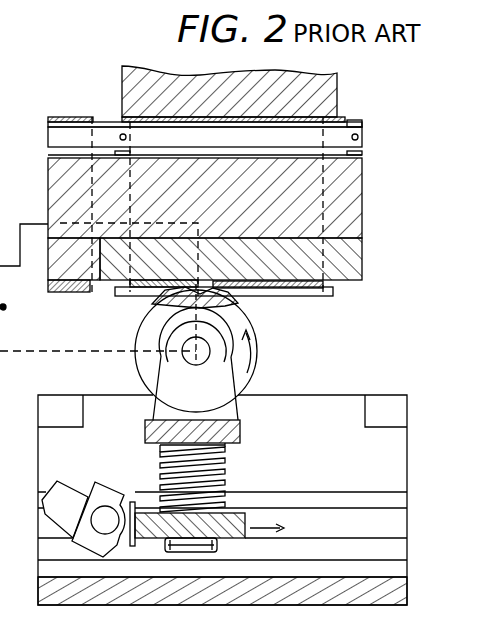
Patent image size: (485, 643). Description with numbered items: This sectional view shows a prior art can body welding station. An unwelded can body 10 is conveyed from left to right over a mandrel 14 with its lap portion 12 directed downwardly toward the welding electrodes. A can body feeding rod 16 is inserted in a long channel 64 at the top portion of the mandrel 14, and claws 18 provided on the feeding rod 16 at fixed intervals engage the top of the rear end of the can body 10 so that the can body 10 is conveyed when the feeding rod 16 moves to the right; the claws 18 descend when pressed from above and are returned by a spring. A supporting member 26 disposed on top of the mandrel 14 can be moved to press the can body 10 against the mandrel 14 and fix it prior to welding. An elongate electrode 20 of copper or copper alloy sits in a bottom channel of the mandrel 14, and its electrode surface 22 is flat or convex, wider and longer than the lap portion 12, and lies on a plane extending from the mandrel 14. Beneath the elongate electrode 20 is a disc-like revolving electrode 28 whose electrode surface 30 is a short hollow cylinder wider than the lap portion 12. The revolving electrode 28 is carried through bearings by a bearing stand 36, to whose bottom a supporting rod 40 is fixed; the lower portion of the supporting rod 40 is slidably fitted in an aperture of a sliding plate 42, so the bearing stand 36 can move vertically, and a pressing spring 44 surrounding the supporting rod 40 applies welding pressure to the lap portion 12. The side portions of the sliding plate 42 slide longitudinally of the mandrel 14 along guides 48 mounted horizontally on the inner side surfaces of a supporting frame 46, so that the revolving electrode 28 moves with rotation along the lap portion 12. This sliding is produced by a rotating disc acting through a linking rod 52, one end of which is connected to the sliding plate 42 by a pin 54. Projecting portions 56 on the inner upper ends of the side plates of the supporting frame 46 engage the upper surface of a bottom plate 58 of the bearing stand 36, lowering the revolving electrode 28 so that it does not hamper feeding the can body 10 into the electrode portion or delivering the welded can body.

The can body 10 is at (315, 112).
The lap portion 12 is at (263, 293).
The mandrel 14 is at (357, 197).
The can body feeding rod 16 is at (360, 145).
The claws 18 is at (360, 123).
The elongate electrode 20 is at (357, 256).
The electrode surface 22 is at (347, 288).
The supporting member 26 is at (328, 82).
The revolving electrode 28 is at (248, 390).
The electrode surface 30 is at (263, 326).
The bearing stand 36 is at (248, 390).
The supporting rod 40 is at (218, 541).
The sliding plate 42 is at (238, 511).
The pressing spring 44 is at (220, 475).
The supporting frame 46 is at (330, 408).
The guides 48 is at (302, 498).
The linking rod 52 is at (72, 494).
The pin 54 is at (104, 507).
The projecting portions 56 is at (70, 425).
The bottom plate 58 is at (295, 424).
The long channel 64 is at (100, 152).